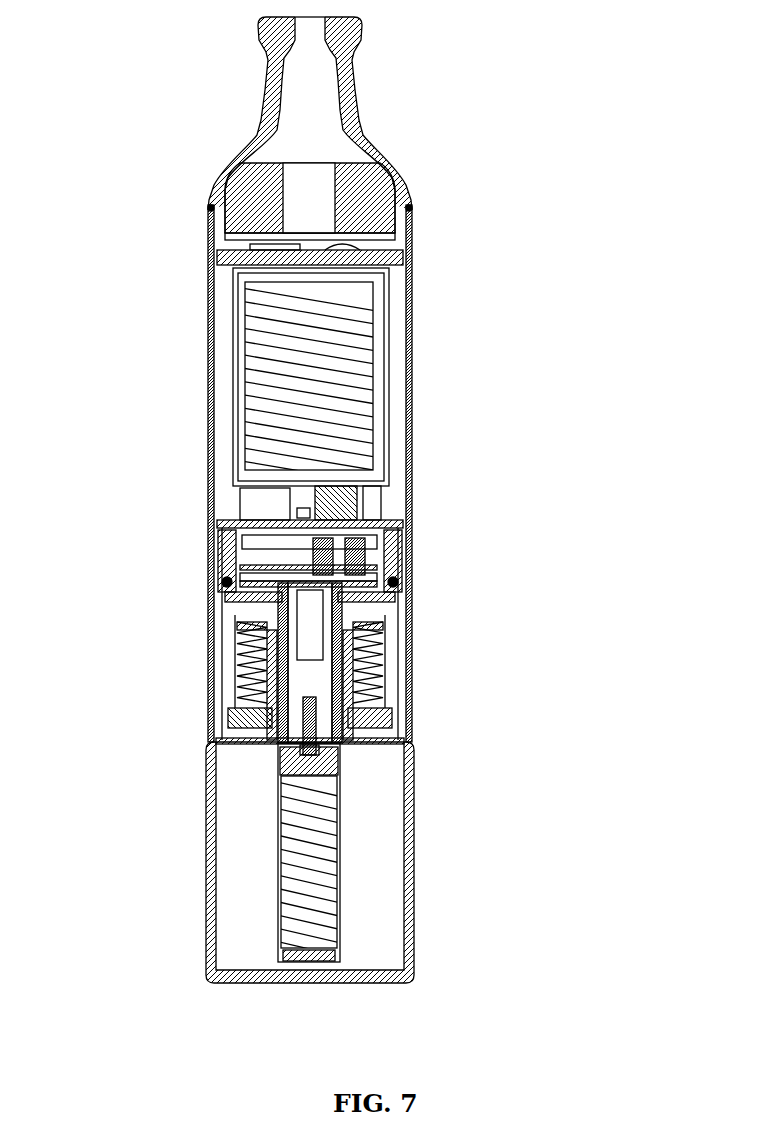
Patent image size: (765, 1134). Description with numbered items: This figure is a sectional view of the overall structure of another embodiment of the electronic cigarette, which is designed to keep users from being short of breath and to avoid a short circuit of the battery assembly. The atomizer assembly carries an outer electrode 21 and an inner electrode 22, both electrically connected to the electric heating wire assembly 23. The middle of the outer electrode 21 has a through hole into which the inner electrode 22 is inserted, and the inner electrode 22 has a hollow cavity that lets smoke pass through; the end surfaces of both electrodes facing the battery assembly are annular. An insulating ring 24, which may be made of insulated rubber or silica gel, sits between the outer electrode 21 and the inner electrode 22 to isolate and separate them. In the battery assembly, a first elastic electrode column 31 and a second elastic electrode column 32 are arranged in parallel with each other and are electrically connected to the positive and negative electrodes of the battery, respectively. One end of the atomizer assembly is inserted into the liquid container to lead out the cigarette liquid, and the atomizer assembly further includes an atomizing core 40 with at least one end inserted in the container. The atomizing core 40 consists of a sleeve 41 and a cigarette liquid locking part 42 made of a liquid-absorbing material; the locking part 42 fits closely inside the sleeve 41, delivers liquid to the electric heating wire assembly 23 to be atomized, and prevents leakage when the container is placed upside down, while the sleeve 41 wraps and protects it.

The outer electrode 21 is at (167, 561).
The inner electrode 22 is at (195, 634).
The electric heating wire assembly 23 is at (209, 704).
The insulating ring 24 is at (448, 677).
The first elastic electrode column 31 is at (473, 582).
The second elastic electrode column 32 is at (374, 497).
The atomizing core 40 is at (214, 850).
The sleeve 41 is at (244, 862).
The cigarette liquid locking part 42 is at (206, 868).